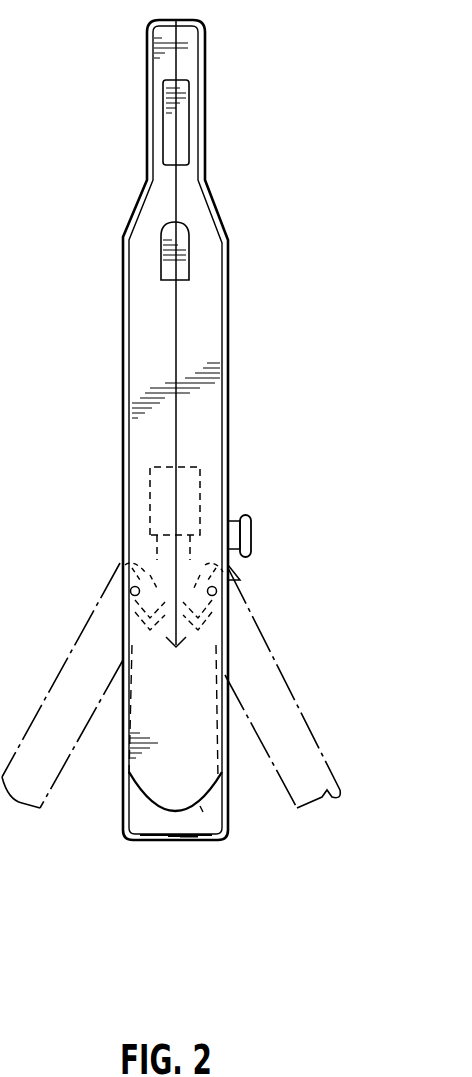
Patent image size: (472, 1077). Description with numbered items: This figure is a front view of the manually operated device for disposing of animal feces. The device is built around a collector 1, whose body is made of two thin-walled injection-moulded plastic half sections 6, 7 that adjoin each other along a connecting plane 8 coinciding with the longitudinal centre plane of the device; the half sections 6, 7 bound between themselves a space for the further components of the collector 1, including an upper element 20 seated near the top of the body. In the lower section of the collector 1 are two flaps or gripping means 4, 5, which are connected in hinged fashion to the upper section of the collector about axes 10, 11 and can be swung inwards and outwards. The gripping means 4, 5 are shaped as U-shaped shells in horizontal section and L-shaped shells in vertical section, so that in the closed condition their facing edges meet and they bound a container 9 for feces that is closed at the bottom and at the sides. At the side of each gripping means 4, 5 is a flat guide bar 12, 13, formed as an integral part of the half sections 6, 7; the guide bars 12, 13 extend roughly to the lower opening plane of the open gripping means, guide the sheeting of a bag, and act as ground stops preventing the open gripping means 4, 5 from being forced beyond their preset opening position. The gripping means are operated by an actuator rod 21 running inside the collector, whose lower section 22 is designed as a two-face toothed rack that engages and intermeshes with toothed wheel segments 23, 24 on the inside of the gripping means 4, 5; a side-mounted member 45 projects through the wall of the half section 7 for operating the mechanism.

The collector 1 is at (184, 466).
The gripping means 4 is at (35, 790).
The gripping means 5 is at (330, 795).
The half section 6 is at (123, 362).
The half section 7 is at (228, 390).
The connecting plane 8 is at (176, 332).
The container 9 is at (203, 812).
The axis 10 is at (131, 591).
The axis 11 is at (214, 605).
The guide bar 12 is at (125, 798).
The guide bar 13 is at (0, 672).
The top plug 20 is at (0, 208).
The actuator rod 21 is at (200, 485).
The lower section of actuator rod 22 is at (138, 548).
The toothed wheel segment 23 is at (130, 630).
The toothed wheel segment 24 is at (255, 578).
The locking knob 45 is at (251, 537).